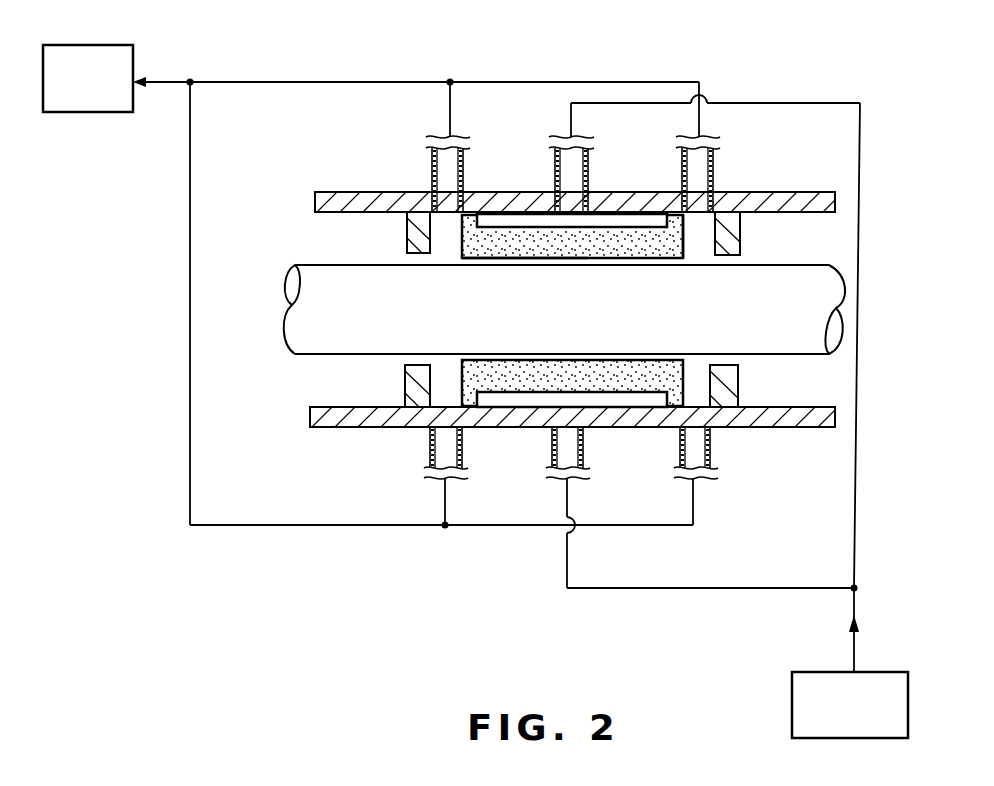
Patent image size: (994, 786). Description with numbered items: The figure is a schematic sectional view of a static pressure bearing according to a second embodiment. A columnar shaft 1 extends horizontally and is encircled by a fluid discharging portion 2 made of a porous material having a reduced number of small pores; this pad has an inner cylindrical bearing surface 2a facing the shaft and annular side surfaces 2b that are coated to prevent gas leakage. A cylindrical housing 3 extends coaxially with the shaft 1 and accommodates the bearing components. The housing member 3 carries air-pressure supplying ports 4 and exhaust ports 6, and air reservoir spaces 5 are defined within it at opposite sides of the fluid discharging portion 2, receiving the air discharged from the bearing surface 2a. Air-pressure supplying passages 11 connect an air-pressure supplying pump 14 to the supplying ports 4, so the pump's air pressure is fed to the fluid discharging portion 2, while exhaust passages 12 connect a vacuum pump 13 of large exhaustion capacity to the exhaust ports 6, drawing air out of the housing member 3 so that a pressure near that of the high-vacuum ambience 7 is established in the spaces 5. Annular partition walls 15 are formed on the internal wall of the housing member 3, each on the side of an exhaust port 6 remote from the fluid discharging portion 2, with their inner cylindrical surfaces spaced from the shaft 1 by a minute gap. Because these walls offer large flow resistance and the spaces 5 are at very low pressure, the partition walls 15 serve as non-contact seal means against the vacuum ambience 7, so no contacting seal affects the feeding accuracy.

The columnar shaft 1 is at (810, 280).
The fluid discharging portion 2 is at (677, 225).
The inner cylindrical bearing surface 2a is at (588, 259).
The annular side surfaces 2b is at (683, 244).
The cylindrical housing 3 is at (768, 201).
The air-pressure supplying port 4 is at (570, 203).
The air reservoir space 5 is at (443, 233).
The exhaust port 6 is at (443, 202).
The high-vacuum ambience 7 is at (335, 237).
The air-pressure supplying passage 11 is at (658, 590).
The exhaust passage 12 is at (567, 81).
The vacuum pump 13 is at (133, 50).
The air-pressure supplying pump 14 is at (908, 705).
The partition wall 15 is at (405, 383).